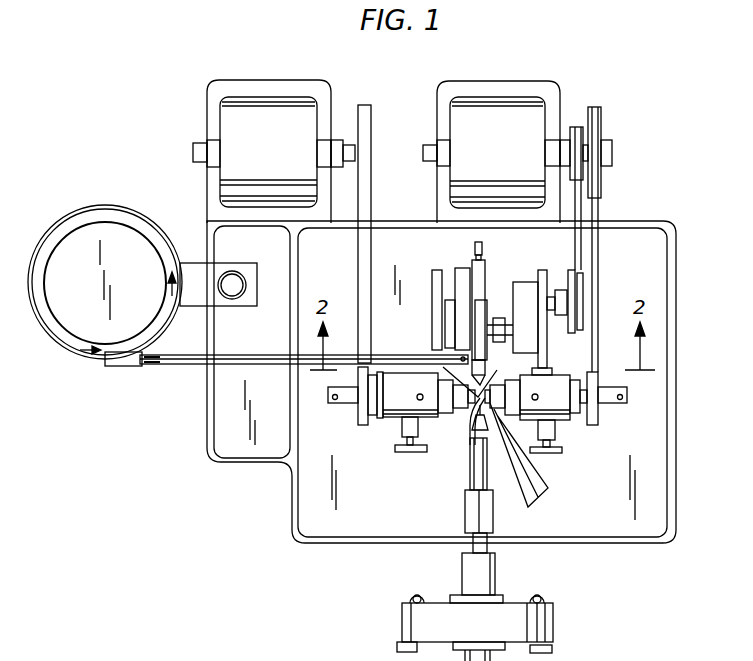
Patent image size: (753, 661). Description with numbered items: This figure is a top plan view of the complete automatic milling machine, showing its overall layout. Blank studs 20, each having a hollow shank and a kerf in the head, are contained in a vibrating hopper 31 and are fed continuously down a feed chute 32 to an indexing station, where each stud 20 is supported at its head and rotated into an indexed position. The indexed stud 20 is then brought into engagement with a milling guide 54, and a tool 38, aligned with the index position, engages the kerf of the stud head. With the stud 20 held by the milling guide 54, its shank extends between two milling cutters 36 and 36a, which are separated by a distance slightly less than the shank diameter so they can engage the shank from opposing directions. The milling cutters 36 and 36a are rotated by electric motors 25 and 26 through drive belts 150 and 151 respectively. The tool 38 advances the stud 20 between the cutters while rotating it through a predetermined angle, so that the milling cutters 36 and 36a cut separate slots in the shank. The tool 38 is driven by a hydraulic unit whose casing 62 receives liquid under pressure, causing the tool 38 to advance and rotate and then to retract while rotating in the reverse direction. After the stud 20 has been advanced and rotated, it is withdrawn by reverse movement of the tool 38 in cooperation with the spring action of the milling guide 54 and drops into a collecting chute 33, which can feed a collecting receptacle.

The electric motor 25 is at (272, 116).
The electric motor 26 is at (503, 116).
The vibrating hopper 31 is at (70, 214).
The drive belt 151 is at (597, 247).
The drive belt 150 is at (358, 253).
The feed chute 32 is at (262, 342).
The blank stud 20 is at (157, 356).
The milling guide 54 is at (440, 367).
The milling cutter 36a is at (488, 382).
The milling cutter 36 is at (473, 400).
The tool 38 is at (490, 435).
The collecting chute 33 is at (537, 492).
The casing 62 is at (553, 626).